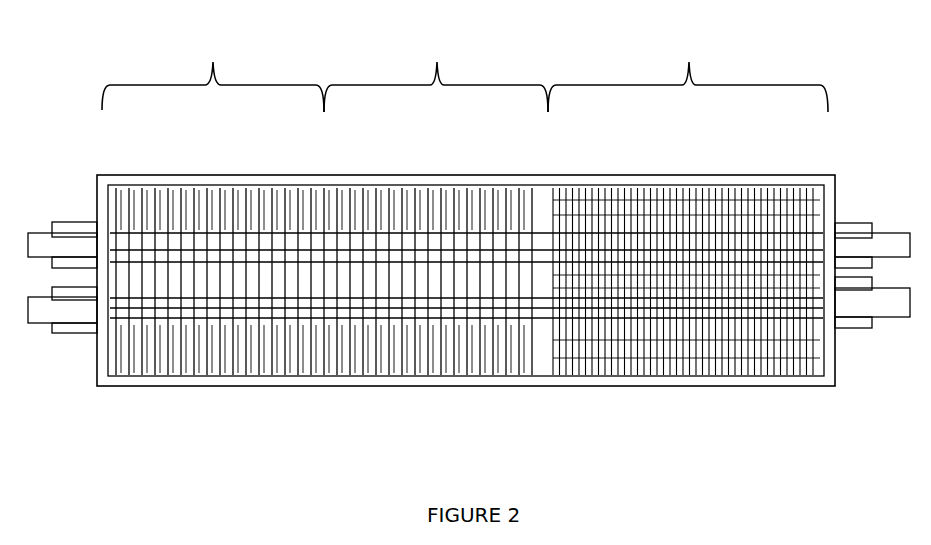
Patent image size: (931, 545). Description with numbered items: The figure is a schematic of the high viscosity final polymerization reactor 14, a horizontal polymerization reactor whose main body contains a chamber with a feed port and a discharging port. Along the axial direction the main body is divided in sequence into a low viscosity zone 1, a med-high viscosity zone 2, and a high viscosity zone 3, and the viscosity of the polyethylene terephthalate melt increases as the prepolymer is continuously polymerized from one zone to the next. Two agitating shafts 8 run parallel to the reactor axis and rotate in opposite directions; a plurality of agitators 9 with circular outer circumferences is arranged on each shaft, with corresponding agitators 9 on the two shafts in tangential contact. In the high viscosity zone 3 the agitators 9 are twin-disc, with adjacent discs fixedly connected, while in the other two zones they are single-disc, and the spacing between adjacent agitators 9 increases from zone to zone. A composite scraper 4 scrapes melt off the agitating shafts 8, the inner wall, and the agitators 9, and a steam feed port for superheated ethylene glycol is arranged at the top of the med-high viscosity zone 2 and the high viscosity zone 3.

The low viscosity zone 1 is at (213, 67).
The med-high viscosity zone 2 is at (436, 67).
The high viscosity zone 3 is at (688, 68).
The composite scraper 4 is at (661, 195).
The agitating shaft 8 is at (50, 241).
The agitator 9 is at (202, 180).
The high viscosity final polymerization reactor 14 is at (157, 372).